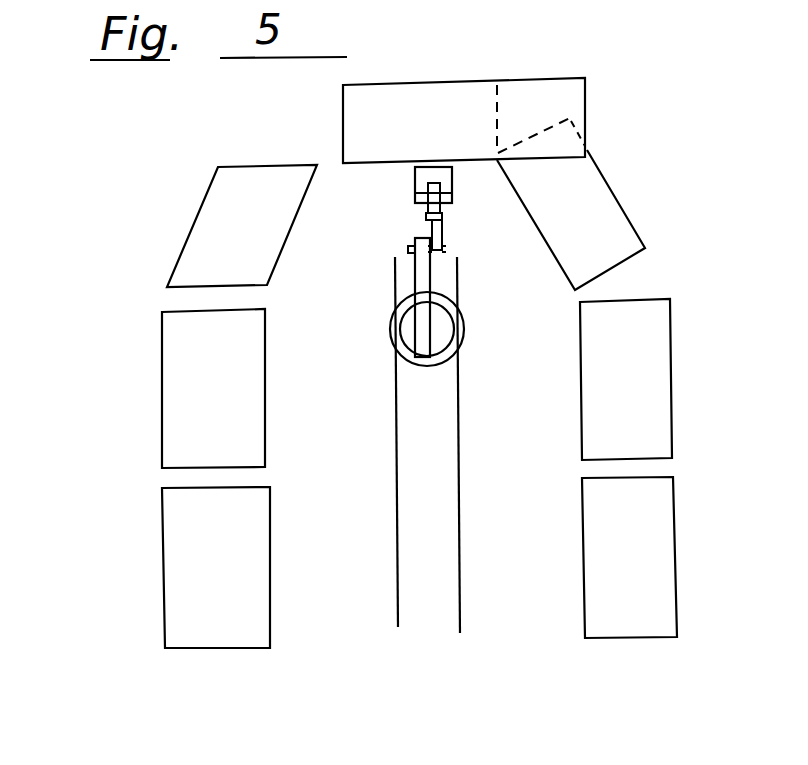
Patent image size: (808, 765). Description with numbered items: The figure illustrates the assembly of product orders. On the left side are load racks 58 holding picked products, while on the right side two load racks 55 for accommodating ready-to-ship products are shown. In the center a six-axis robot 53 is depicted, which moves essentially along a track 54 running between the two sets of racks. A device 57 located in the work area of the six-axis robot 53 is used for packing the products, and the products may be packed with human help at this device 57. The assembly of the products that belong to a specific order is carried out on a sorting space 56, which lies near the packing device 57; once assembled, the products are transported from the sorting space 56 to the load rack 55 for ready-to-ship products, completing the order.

The six-axis robot 53 is at (427, 293).
The track 54 is at (458, 445).
The load racks for ready-to-ship products 55 is at (672, 393).
The sorting space 56 is at (587, 132).
The packing device 57 is at (203, 213).
The load racks with picked products 58 is at (162, 530).